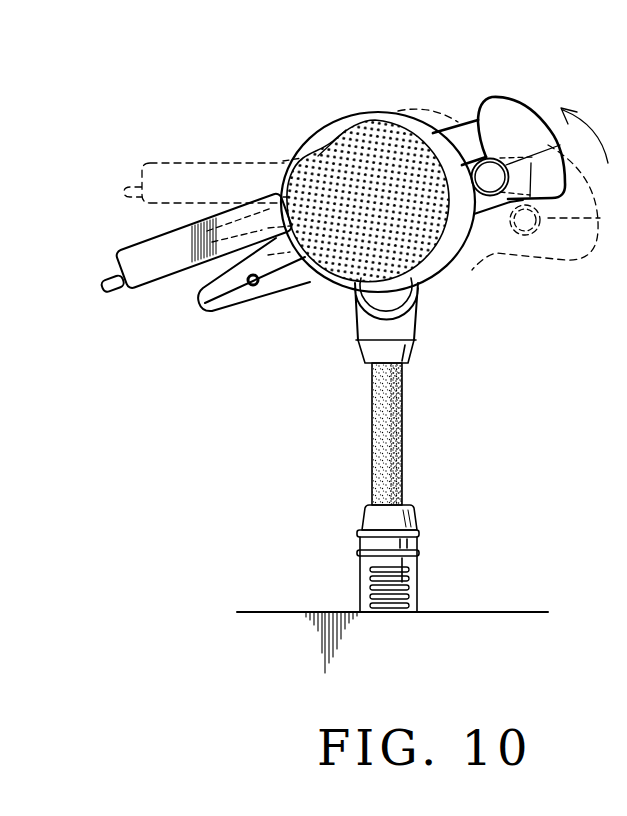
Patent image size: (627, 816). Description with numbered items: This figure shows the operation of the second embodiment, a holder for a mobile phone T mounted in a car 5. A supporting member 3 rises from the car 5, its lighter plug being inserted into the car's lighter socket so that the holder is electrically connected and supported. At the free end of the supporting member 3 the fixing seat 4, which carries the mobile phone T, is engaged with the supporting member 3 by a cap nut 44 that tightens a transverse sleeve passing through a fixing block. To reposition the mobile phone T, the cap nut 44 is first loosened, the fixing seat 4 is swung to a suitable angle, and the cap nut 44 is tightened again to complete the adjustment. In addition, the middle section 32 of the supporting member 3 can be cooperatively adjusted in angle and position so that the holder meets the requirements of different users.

The fixing seat 4 is at (502, 115).
The cap nut 44 is at (395, 302).
The middle section 32 is at (378, 430).
The supporting member 3 is at (383, 445).
The car 5 is at (490, 630).
The mobile phone T is at (151, 251).